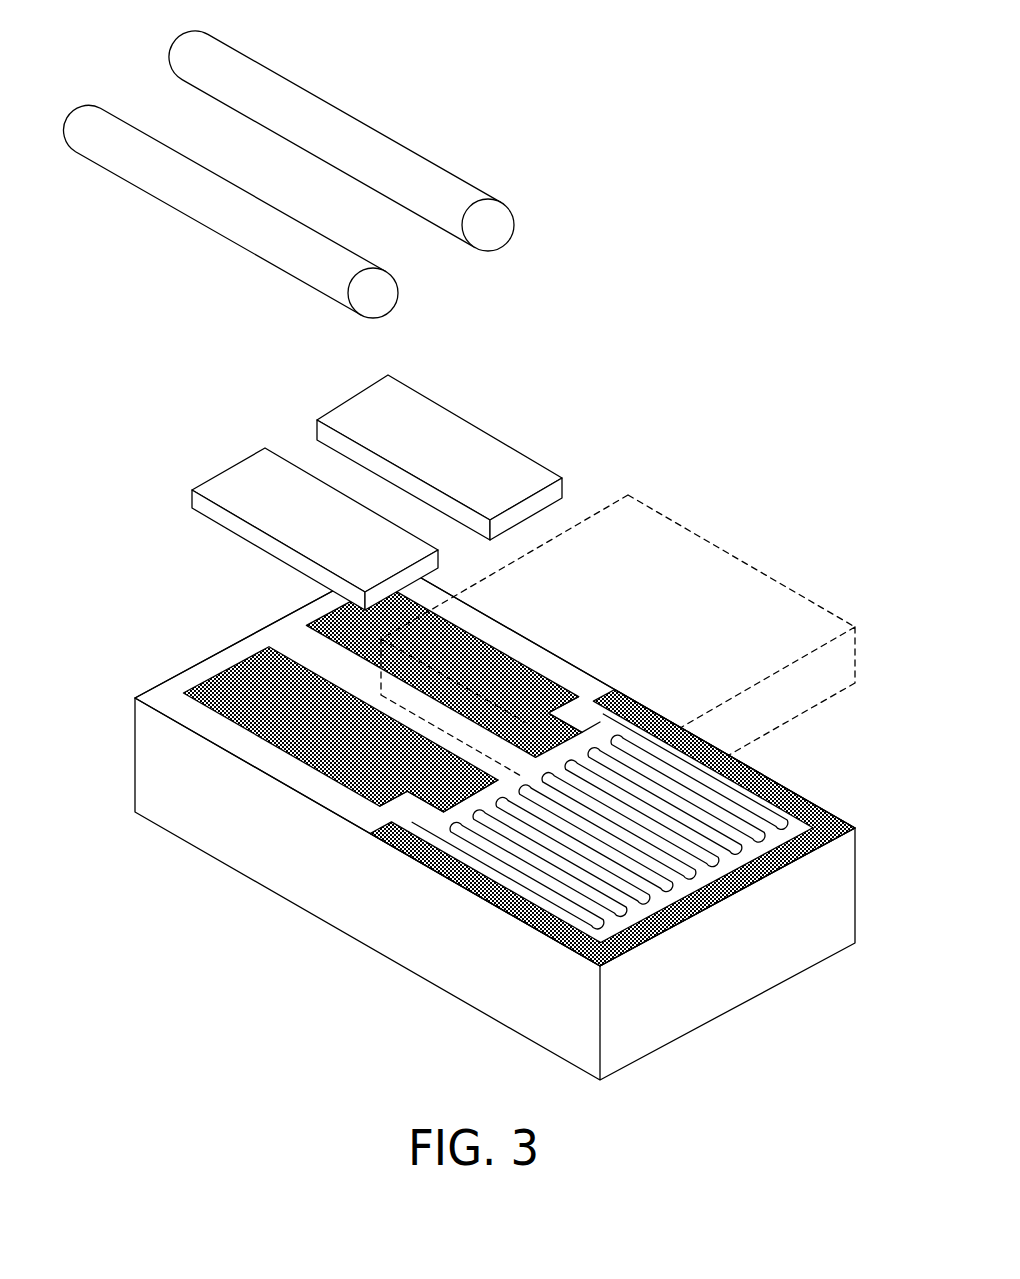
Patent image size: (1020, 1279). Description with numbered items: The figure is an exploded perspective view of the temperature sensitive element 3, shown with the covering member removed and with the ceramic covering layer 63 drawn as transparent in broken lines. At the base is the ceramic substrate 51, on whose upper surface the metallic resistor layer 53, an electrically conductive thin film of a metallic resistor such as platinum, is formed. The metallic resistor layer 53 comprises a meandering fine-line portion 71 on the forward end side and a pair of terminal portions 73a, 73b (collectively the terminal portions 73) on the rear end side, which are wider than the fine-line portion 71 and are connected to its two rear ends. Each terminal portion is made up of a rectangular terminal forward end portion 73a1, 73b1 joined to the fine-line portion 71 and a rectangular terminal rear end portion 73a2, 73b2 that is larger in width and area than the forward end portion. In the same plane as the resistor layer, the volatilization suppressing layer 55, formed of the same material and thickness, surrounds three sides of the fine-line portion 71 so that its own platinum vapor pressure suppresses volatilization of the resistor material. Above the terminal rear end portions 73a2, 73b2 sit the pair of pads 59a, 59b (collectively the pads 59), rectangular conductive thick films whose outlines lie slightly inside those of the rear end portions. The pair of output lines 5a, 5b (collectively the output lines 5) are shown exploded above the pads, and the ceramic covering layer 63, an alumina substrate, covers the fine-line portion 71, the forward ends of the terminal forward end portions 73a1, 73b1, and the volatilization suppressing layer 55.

The temperature sensitive element 3 is at (692, 258).
The output lines 5 is at (302, 178).
The output line 5a is at (430, 176).
The output line 5b is at (270, 248).
The ceramic substrate 51 is at (718, 978).
The metallic resistor layer 53 is at (553, 887).
The volatilization suppressing layer 55 is at (796, 792).
The pads 59 is at (360, 490).
The pad 59a is at (473, 446).
The pad 59b is at (258, 503).
The ceramic covering layer 63 is at (747, 555).
The fine-line portion 71 is at (493, 858).
The terminal portions 73 is at (440, 795).
The terminal portion 73a is at (525, 671).
The terminal forward end portion 73a1 is at (565, 722).
The terminal rear end portion 73a2 is at (535, 688).
The terminal portion 73b is at (316, 827).
The terminal forward end portion 73b1 is at (420, 800).
The terminal rear end portion 73b2 is at (362, 781).